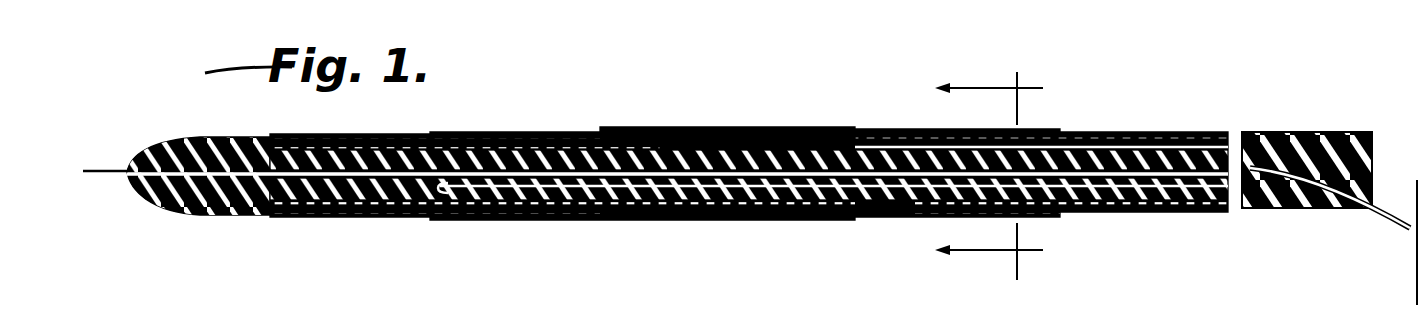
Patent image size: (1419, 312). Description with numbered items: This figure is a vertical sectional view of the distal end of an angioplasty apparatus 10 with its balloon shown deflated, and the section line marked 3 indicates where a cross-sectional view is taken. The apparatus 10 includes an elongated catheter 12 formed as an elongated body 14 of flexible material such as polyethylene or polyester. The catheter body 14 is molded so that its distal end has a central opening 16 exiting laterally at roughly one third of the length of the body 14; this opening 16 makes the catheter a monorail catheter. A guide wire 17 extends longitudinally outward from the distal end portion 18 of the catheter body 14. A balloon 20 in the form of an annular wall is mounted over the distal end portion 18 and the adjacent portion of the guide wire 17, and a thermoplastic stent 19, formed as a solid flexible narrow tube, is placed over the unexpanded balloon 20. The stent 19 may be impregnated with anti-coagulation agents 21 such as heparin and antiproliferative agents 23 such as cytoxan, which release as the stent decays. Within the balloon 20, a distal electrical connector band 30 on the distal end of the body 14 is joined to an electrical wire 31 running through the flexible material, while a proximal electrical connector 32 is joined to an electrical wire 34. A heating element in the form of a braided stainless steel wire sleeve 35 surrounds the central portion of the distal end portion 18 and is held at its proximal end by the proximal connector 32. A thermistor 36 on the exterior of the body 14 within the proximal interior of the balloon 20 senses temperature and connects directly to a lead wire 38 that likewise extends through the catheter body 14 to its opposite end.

The angioplasty apparatus 10 is at (870, 100).
The elongated catheter 12 is at (1212, 124).
The catheter body 14 is at (1187, 203).
The central opening 16 is at (247, 177).
The guide wire 17 is at (113, 178).
The distal end portion 18 is at (760, 163).
The thermoplastic stent 19 is at (490, 134).
The balloon 20 is at (680, 142).
The anti-coagulation agents 21 is at (718, 132).
The antiproliferative agents 23 is at (727, 111).
The distal electrical connector band 30 is at (435, 213).
The electrical wire 31 is at (610, 217).
The proximal electrical connector 32 is at (890, 207).
The electrical wire 34 is at (1130, 143).
The braided stainless steel wire sleeve 35 is at (586, 150).
The thermistor 36 is at (950, 223).
The lead wire 38 is at (1113, 203).
The section line 3- 3 is at (1004, 176).